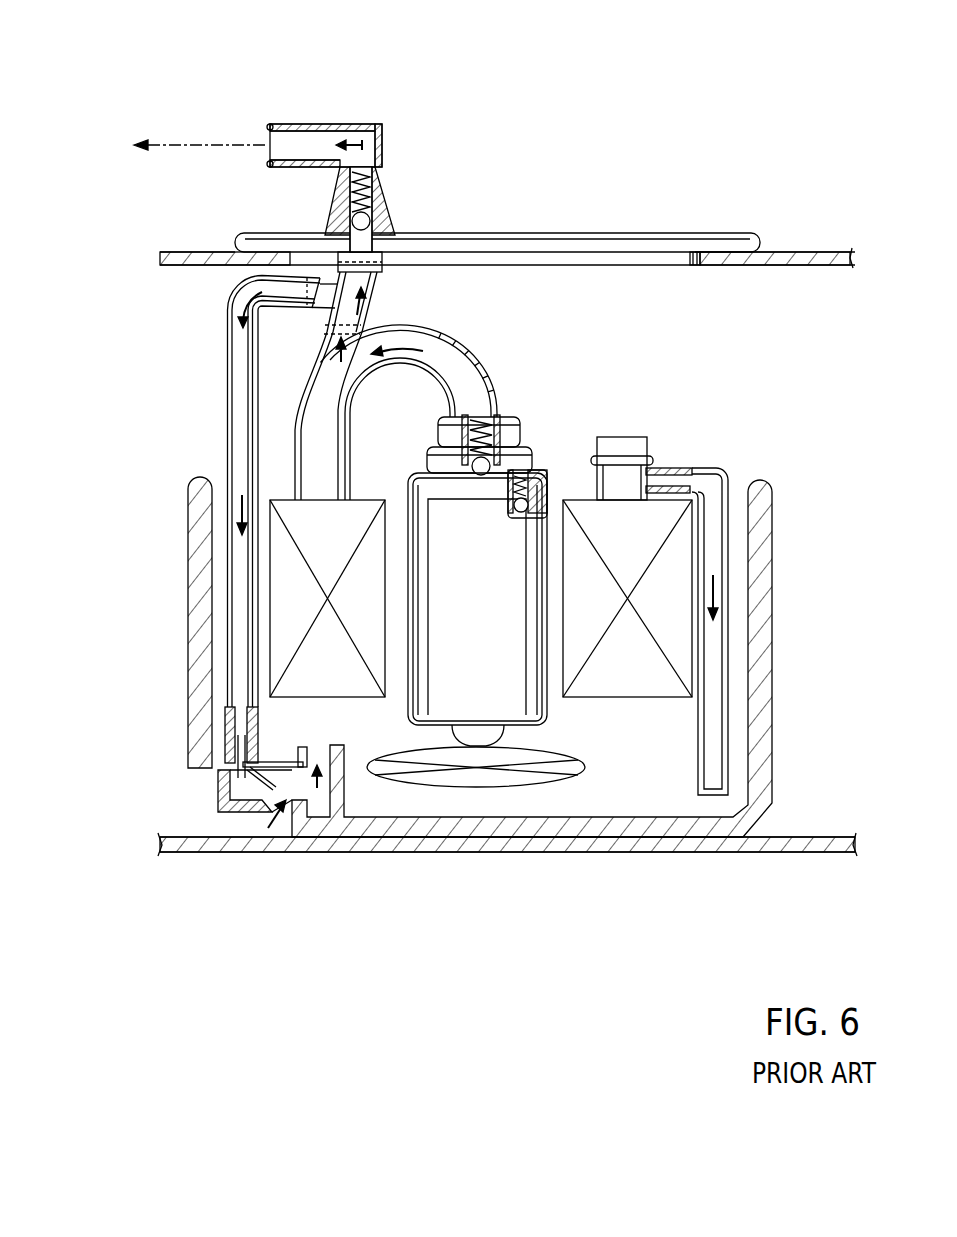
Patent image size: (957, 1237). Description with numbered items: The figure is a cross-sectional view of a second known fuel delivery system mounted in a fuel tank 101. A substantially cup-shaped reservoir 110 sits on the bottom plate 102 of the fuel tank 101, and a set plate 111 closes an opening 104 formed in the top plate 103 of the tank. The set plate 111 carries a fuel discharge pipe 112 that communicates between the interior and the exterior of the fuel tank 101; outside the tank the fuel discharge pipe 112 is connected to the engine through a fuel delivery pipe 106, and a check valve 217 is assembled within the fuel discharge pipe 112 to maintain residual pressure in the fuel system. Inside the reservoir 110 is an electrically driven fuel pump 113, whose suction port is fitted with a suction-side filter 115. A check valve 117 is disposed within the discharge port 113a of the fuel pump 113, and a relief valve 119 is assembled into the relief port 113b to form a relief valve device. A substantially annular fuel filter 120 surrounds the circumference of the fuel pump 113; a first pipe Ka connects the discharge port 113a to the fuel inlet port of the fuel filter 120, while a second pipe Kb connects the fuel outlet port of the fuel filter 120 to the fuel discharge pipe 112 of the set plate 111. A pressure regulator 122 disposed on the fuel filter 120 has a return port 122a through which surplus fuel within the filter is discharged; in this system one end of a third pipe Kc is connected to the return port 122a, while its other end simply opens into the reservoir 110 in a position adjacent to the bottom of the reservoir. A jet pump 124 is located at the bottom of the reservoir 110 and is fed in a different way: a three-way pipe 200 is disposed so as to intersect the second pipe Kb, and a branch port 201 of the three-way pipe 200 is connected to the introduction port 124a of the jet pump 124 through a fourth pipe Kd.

The fuel tank 101 is at (818, 248).
The bottom plate 102 is at (515, 854).
The top plate 103 is at (165, 250).
The opening 104 is at (700, 250).
The fuel delivery pipe 106 is at (233, 146).
The reservoir 110 is at (184, 688).
The set plate 111 is at (530, 230).
The fuel discharge pipe 112 is at (358, 122).
The fuel pump 113 is at (408, 586).
The discharge port 113a is at (523, 472).
The relief port 113b is at (545, 478).
The suction-side filter 115 is at (462, 782).
The check valve 117 is at (425, 460).
The relief valve 119 is at (556, 480).
The fuel filter 120 is at (275, 553).
The pressure regulator 122 is at (640, 431).
The return port 122a is at (666, 474).
The jet pump 124 is at (212, 806).
The introduction port 124a is at (232, 742).
The three-way pipe 200 is at (378, 297).
The branch port 201 is at (270, 296).
The check valve 217 is at (335, 215).
The first pipe Ka is at (335, 400).
The second pipe Kb is at (322, 358).
The third pipe Kc is at (732, 470).
The fourth pipe Kd is at (245, 472).